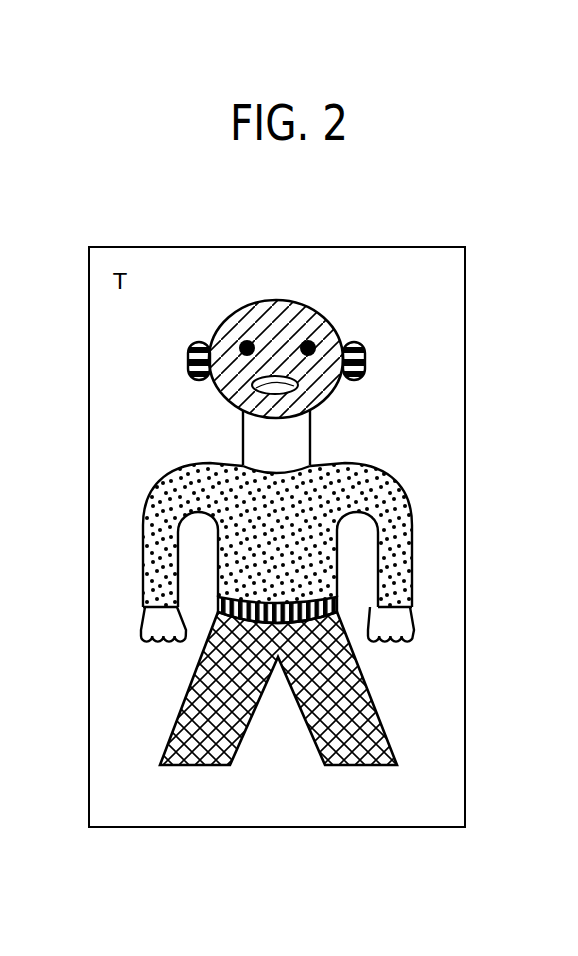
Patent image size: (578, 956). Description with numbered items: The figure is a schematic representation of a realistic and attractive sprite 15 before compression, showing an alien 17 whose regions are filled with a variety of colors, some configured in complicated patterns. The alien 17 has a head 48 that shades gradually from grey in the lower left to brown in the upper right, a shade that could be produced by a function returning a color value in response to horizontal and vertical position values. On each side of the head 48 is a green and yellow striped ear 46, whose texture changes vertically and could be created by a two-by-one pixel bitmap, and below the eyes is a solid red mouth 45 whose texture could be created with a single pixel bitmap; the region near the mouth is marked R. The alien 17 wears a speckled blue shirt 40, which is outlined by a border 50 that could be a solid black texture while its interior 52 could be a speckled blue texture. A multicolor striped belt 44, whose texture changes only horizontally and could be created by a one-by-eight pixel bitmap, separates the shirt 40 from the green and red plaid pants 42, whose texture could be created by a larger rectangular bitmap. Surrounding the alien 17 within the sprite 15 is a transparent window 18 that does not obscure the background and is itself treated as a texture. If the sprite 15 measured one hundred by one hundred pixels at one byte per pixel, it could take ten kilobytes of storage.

The sprite 15 is at (277, 247).
The alien 17 is at (239, 290).
The transparent window 18 is at (105, 744).
The shirt 40 is at (298, 531).
The pants 42 is at (372, 699).
The belt 44 is at (339, 604).
The mouth 45 is at (240, 408).
The ear 46 is at (366, 361).
The head 48 is at (323, 318).
The border 50 is at (181, 474).
The interior 52 is at (403, 508).
The region R is at (308, 403).